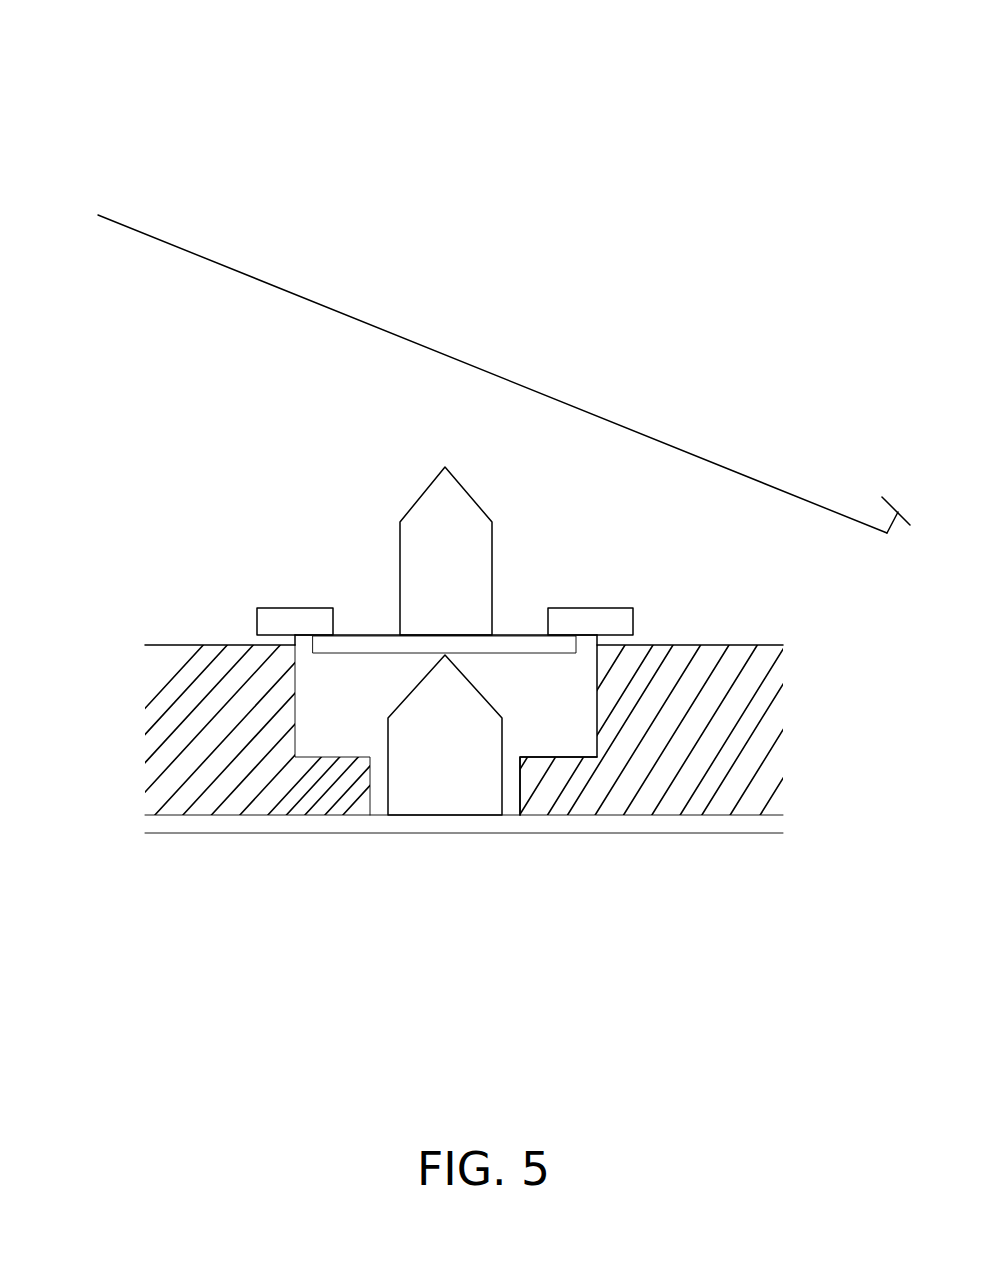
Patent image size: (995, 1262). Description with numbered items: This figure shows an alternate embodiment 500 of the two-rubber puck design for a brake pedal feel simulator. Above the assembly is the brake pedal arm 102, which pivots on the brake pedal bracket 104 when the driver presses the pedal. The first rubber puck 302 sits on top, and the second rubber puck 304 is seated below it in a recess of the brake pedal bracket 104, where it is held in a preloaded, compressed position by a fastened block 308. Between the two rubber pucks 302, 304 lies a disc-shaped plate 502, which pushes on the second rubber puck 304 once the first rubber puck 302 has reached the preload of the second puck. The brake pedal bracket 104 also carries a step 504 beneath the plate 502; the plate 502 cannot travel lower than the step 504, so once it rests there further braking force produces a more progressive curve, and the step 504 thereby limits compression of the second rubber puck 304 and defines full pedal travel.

The alternate embodiment of the two-rubber puck design 500 is at (773, 69).
The brake pedal arm 102 is at (393, 311).
The brake pedal bracket 104 is at (183, 645).
The first rubber puck 302 is at (493, 522).
The second rubber puck 304 is at (473, 688).
The fastened block 308 is at (309, 608).
The disc-shaped plate 502 is at (370, 635).
The step 504 is at (560, 760).